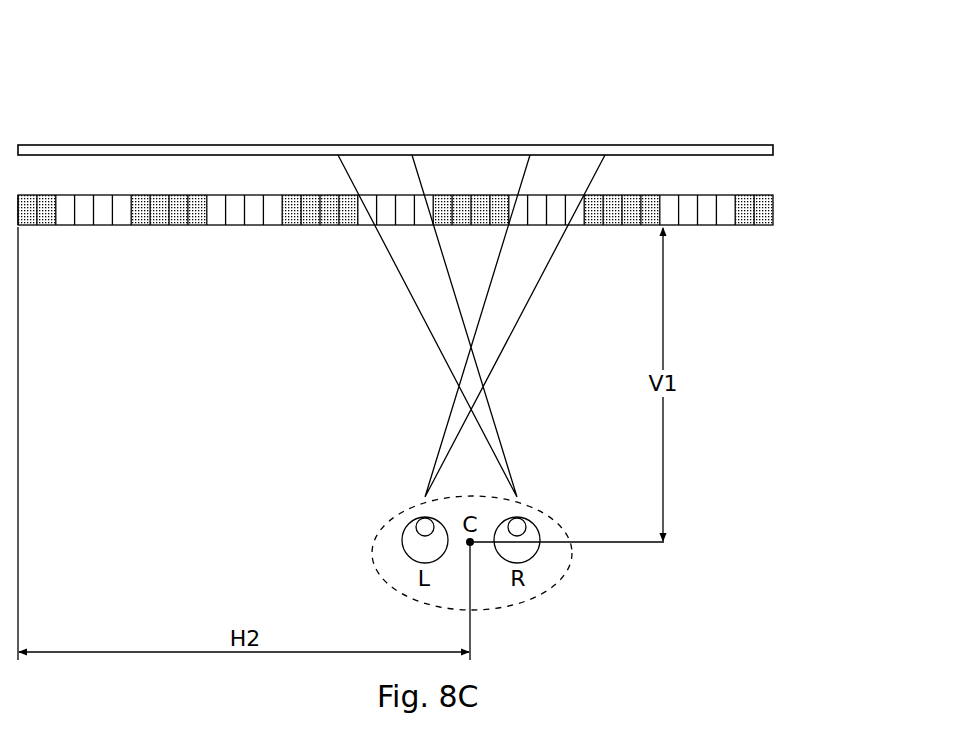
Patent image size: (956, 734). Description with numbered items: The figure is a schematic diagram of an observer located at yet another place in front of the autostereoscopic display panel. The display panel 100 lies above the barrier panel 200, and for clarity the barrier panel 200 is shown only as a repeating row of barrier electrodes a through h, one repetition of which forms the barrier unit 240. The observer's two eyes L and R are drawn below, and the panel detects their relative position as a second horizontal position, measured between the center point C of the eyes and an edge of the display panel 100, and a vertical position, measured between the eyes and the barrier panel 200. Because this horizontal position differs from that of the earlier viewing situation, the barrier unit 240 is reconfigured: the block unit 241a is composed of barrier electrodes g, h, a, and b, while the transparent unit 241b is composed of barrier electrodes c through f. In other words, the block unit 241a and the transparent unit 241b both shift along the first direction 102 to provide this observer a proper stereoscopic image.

The first direction 102 is at (57, 42).
The display panel 100 is at (773, 151).
The barrier panel 200 is at (441, 268).
The barrier unit 240 is at (207, 275).
The block unit 241a is at (132, 229).
The transparent unit 241b is at (245, 241).